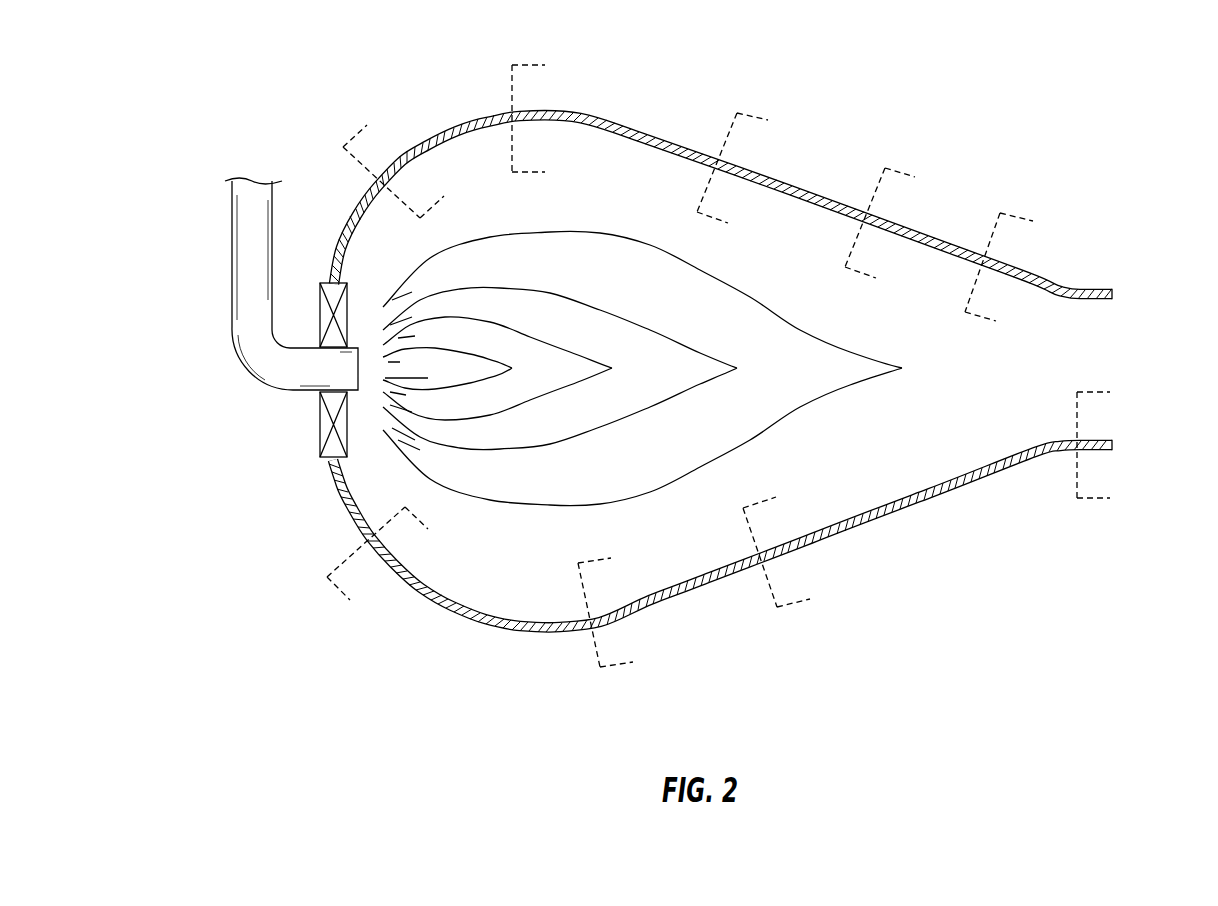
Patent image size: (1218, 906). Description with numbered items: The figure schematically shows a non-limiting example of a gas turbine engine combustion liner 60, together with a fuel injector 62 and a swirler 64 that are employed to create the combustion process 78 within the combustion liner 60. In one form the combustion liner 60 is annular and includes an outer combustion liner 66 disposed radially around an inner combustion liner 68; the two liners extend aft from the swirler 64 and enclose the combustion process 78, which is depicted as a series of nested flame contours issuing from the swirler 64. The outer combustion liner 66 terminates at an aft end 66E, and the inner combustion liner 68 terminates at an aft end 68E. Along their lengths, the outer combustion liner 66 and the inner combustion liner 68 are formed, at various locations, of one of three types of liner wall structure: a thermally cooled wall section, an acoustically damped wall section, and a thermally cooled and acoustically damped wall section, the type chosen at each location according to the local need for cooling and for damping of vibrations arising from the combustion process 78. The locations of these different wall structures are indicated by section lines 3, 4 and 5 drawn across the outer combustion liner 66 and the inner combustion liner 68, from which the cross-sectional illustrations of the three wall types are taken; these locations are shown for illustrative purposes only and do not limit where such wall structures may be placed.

The combustion liner 60 is at (1000, 68).
The fuel injector 62 is at (263, 389).
The swirler 64 is at (318, 447).
The outer combustion liner 66 is at (585, 116).
The aft end 66E is at (1114, 294).
The inner combustion liner 68 is at (868, 527).
The aft end 68E is at (1114, 446).
The combustion process 78 is at (663, 383).
The section line 3 is at (827, 281).
The section line 4 is at (688, 395).
The section line 5 is at (637, 363).